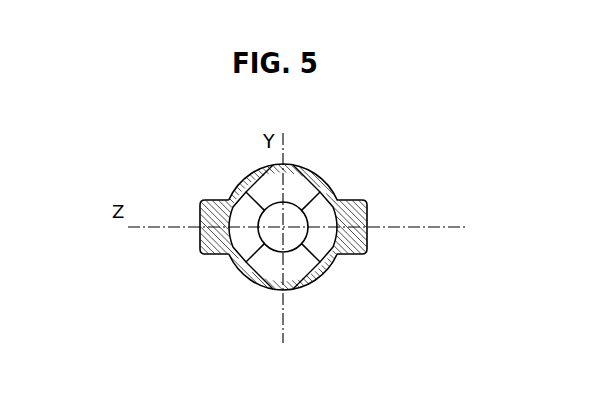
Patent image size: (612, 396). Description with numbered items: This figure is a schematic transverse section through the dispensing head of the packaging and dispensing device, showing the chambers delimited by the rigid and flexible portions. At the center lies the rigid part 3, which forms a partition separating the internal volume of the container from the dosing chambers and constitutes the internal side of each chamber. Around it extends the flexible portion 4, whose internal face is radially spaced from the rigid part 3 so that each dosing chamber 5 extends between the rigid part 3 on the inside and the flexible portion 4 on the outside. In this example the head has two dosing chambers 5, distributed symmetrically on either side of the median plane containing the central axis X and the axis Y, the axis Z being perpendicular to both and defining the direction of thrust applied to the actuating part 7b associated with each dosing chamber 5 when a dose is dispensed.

The rigid part 3 is at (295, 217).
The flexible portion 4 is at (367, 250).
The dosing chamber 5 is at (320, 217).
The actuating part 7b is at (200, 210).